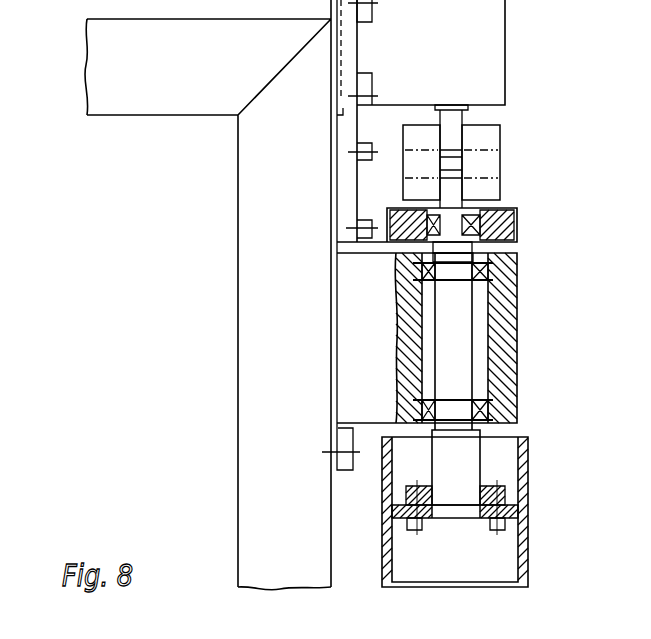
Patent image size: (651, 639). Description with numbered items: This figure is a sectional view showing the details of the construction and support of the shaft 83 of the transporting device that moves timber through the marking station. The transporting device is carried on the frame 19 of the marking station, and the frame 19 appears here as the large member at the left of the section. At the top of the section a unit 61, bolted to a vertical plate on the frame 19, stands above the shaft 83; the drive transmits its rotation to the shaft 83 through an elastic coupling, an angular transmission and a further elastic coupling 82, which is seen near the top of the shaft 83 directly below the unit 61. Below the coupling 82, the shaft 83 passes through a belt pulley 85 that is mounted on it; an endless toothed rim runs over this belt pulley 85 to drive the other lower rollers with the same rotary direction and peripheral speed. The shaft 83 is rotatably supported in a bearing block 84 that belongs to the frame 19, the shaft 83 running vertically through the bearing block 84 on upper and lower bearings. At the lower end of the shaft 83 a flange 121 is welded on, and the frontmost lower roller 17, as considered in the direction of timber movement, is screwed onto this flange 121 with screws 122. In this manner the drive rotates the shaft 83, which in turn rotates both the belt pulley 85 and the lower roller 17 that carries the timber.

The lower roller 17 is at (528, 556).
The frame 19 is at (238, 351).
The motor 61 is at (505, 41).
The further elastic coupling 82 is at (500, 134).
The shaft 83 is at (472, 368).
The bearing block 84 is at (517, 321).
The belt pulley 85 is at (515, 208).
The flange 121 is at (505, 491).
The screws 122 is at (500, 530).